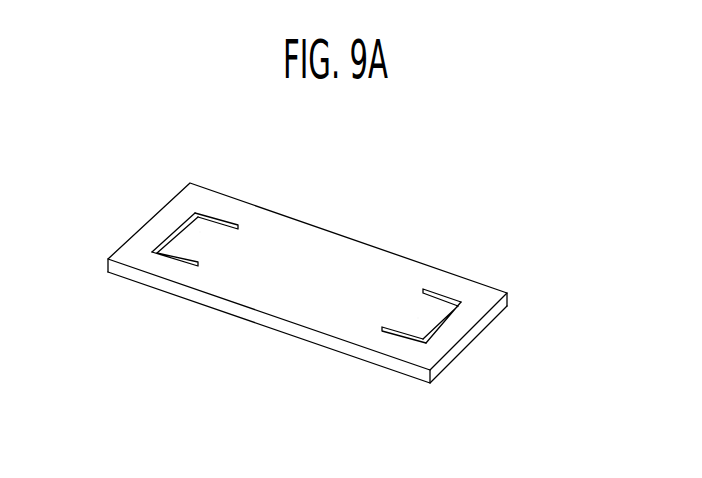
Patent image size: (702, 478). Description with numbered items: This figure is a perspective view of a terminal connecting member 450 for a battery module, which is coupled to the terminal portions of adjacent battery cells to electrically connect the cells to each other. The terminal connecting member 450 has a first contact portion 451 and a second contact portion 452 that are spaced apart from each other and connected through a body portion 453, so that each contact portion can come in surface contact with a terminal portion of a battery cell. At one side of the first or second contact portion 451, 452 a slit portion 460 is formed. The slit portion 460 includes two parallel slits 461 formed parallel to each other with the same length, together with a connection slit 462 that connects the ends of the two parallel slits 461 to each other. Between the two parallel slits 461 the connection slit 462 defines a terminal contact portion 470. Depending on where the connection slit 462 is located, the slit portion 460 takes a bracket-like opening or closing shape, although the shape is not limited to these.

The terminal connecting member 450 is at (372, 165).
The first contact portion 451 is at (128, 300).
The second contact portion 452 is at (365, 381).
The body portion 453 is at (292, 293).
The slit portion 460 is at (528, 246).
The parallel slits 461 is at (218, 215).
The connection slit 462 is at (173, 228).
The terminal contact portion 470 is at (202, 240).